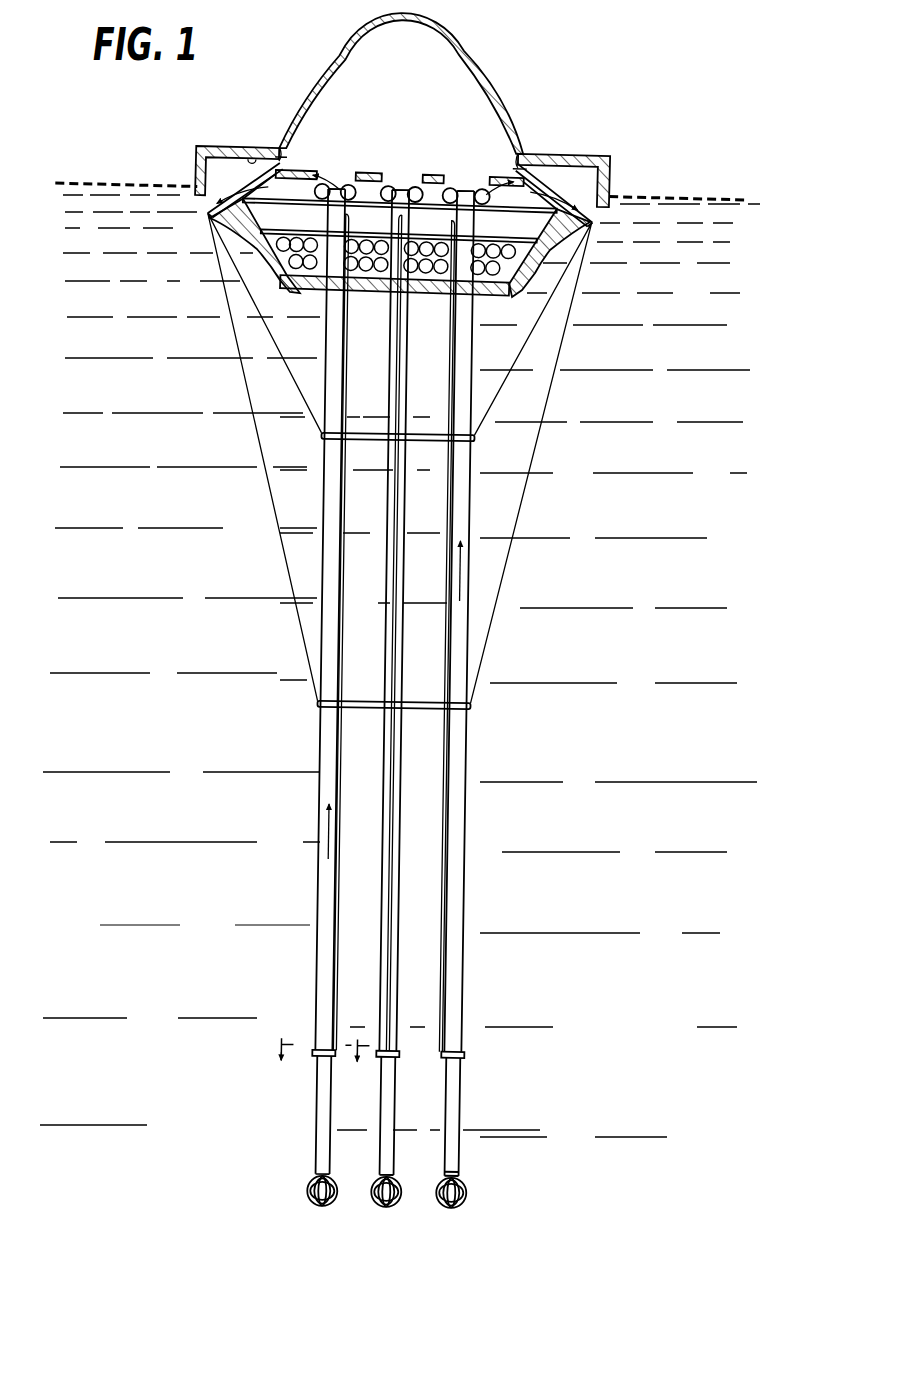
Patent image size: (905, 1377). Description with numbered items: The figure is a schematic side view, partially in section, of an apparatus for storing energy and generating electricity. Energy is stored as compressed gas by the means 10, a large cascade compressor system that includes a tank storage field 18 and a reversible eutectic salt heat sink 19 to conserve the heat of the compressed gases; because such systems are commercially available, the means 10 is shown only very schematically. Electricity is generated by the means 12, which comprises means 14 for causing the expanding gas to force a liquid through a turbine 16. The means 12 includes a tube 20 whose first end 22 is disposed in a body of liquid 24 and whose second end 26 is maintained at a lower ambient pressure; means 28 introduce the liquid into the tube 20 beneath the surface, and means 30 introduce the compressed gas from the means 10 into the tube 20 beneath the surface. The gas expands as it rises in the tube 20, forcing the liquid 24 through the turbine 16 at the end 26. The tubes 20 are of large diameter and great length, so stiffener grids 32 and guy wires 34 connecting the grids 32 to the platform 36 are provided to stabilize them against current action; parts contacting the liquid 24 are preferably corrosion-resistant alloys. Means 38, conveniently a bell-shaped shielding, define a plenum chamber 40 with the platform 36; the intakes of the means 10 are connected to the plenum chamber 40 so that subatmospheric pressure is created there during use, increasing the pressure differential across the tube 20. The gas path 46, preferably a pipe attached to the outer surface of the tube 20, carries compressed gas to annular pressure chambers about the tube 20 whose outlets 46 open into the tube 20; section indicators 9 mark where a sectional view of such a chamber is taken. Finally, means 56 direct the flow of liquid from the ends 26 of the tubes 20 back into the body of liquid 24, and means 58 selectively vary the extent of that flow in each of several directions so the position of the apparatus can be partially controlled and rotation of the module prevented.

The section line 9- 9 is at (322, 1070).
The means for storing energy in the form of compressed gas 10 is at (506, 276).
The means for generating electricity 12 is at (479, 807).
The means for causing the expanding gas to force a liquid through a turbine 14 is at (480, 1062).
The turbine 16 is at (489, 195).
The tank storage field 18 is at (313, 270).
The reversible eutectic salt heat sink 19 is at (215, 279).
The tube 20 is at (474, 988).
The first end of the tube 22 is at (474, 1178).
The body of liquid 24 is at (692, 585).
The second end of the tube 26 is at (347, 185).
The means for introducing the liquid into the tube 28 is at (477, 1191).
The means for introducing the compressed gas into the tube 30 is at (470, 1064).
The stiffener grids 32 is at (478, 440).
The guy wires 34 is at (526, 492).
The platform 36 is at (379, 292).
The means for maintaining the end of the tube at subatmospheric pressure 38 is at (334, 109).
The plenum chamber 40 is at (413, 124).
The path of fluid communication 46 is at (450, 856).
The means for directing the flow of the liquid back into the body of liquid 56 is at (250, 162).
The means for selectively varying the extent of the flow of the liquid in each of a 58 is at (279, 157).